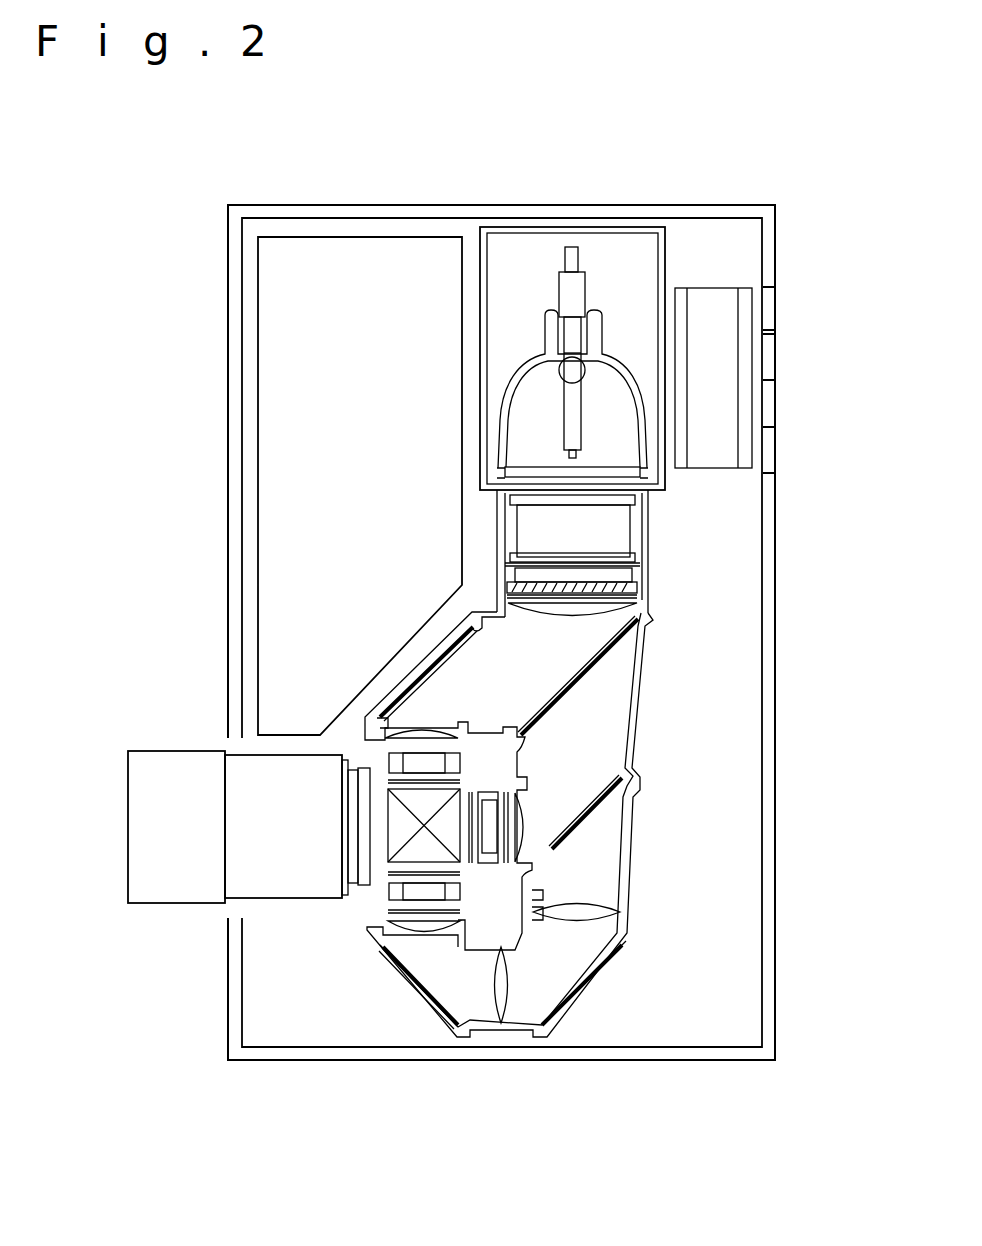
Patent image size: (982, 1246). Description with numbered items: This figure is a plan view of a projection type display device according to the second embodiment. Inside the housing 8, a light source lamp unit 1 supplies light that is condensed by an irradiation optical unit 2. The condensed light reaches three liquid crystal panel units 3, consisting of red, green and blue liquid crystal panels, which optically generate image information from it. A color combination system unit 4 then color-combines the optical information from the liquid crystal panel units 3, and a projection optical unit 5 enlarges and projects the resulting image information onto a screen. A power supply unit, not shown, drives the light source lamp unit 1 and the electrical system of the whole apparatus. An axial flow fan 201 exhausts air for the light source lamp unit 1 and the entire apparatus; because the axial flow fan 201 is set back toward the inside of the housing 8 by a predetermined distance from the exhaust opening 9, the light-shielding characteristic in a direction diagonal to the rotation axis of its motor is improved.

The light source lamp unit 1 is at (574, 395).
The irradiation optical unit 2 is at (640, 722).
The liquid crystal panel units 3 is at (430, 757).
The color combination system unit 4 is at (400, 830).
The projection optical unit 5 is at (293, 832).
The housing 8 is at (768, 262).
The exhaust opening 9 is at (770, 362).
The axial flow fan 201 is at (712, 428).